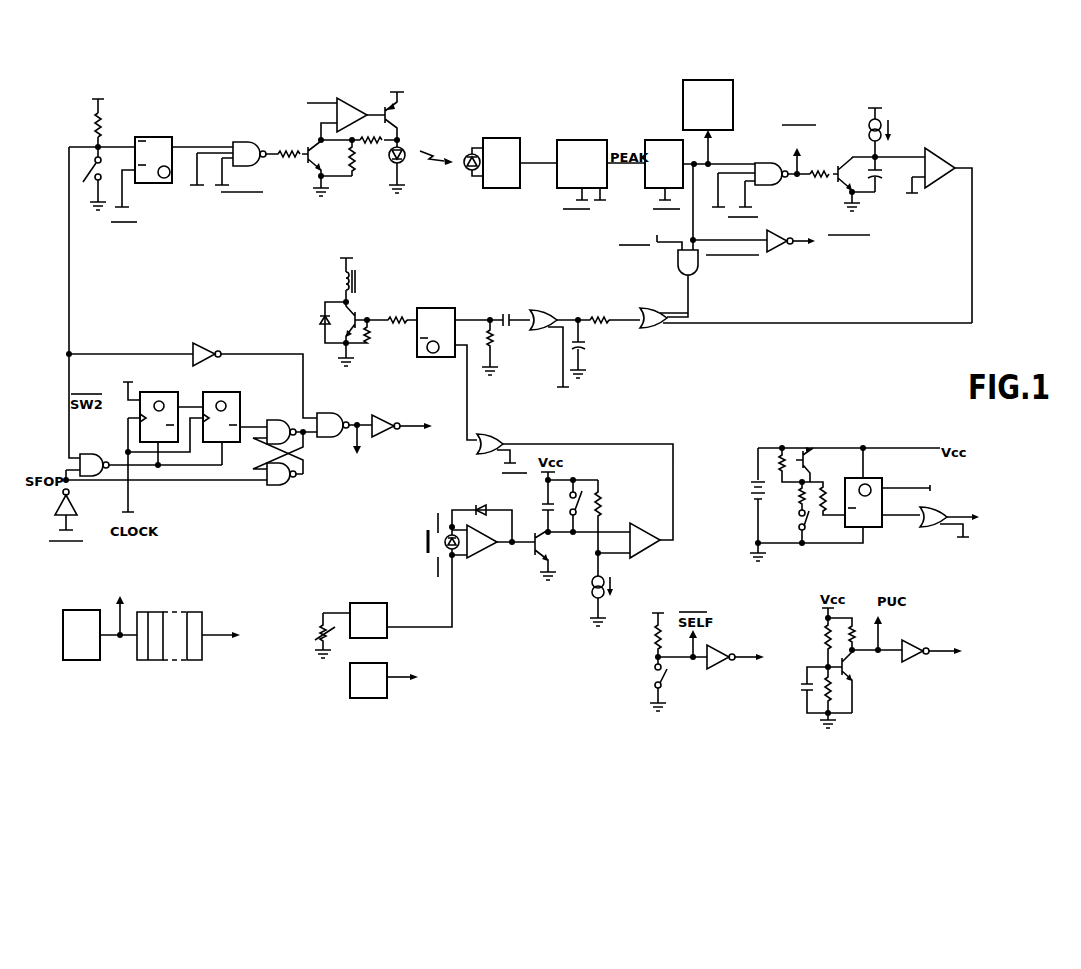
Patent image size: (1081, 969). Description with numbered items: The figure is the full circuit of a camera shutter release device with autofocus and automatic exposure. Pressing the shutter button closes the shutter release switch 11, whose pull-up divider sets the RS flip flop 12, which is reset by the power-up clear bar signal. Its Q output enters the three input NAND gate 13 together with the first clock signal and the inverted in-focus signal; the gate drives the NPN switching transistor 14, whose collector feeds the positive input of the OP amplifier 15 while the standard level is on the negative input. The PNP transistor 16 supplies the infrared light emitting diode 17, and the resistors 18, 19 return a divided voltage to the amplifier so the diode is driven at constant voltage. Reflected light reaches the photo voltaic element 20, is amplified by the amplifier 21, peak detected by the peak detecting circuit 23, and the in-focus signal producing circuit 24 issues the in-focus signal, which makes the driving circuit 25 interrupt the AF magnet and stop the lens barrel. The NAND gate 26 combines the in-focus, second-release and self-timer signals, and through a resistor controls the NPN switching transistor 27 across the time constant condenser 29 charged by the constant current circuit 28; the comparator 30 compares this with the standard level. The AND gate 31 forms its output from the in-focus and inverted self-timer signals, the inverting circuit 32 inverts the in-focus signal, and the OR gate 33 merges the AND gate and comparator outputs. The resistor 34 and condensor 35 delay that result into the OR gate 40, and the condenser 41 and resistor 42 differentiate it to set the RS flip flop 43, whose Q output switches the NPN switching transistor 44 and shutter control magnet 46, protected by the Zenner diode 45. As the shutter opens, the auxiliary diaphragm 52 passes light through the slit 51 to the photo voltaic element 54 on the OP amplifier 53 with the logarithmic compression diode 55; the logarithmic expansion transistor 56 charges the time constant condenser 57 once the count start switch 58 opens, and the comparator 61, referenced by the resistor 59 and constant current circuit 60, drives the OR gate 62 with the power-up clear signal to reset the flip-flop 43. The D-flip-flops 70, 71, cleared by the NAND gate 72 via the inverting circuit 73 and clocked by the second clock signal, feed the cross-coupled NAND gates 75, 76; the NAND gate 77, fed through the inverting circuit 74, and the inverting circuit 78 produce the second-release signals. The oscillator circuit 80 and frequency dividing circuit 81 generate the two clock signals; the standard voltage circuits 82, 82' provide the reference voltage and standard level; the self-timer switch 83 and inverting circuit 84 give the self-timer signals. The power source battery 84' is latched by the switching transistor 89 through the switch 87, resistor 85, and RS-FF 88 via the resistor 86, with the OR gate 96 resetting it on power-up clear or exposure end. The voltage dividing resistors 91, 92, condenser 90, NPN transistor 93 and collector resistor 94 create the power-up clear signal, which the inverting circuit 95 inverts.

The shutter release switch SW2 11 is at (104, 145).
The RS flip flop circuit 12 is at (153, 137).
The 3 input NAND gate 13 is at (240, 142).
The NPN switching transistor 14 is at (308, 160).
The OP amplifier 15 is at (352, 104).
The PNP transistor 16 is at (400, 114).
The infrared light emitting diode 17 is at (403, 161).
The resistor 18 is at (372, 143).
The resistor 19 is at (352, 177).
The photo voltaic element 20 is at (466, 172).
The amplifier 21 is at (507, 188).
The peak detecting circuit 23 is at (577, 140).
The in-focus signal producing circuit 24 is at (658, 140).
The driving circuit 25 is at (733, 94).
The 3 input NAND gate 26 is at (774, 185).
The NPN switching transistor 27 is at (837, 178).
The constant current circuit 28 is at (869, 124).
The time constant condenser 29 is at (882, 172).
The comparator 30 is at (948, 172).
The 2 input AND gate 31 is at (678, 268).
The inverting circuit 32 is at (774, 247).
The 2 input OR gate 33 is at (662, 330).
The resistor 34 is at (598, 316).
The condensor 35 is at (586, 347).
The 2 input OR gate 40 is at (545, 310).
The condenser 41 is at (507, 313).
The resistor 42 is at (493, 348).
The RS flip flop 43 is at (436, 308).
The NPN switching transistor 44 is at (358, 313).
The Zenner diode 45 is at (322, 316).
The shutter control magnet 46 is at (356, 283).
The slit 51 is at (426, 536).
The auxiliary diaphragm 52 is at (440, 523).
The OP amplifier 53 is at (485, 554).
The photo voltaic element 54 is at (442, 565).
The logarithmic compression diode 55 is at (478, 505).
The logarithmic expansion transistor 56 is at (537, 553).
The time constant condenser 57 is at (543, 507).
The count start switch 58 is at (582, 494).
The resistor 59 is at (601, 501).
The constant current circuit 60 is at (592, 587).
The comparator 61 is at (647, 532).
The 2 input OR gate 62 is at (490, 436).
The D-flip-flop circuit 70 is at (157, 392).
The D-flip-flop circuit 71 is at (233, 392).
The 2 input NAND gate 72 is at (88, 454).
The inverting circuit 73 is at (77, 511).
The inverting circuit 74 is at (204, 344).
The 2 input NAND gate 75 is at (272, 420).
The 2 input NAND gate 76 is at (275, 486).
The 2 input NAND gate 77 is at (322, 413).
The inverting circuit 78 is at (377, 415).
The oscillator circuit 80 is at (80, 660).
The frequency dividing circuit 81 is at (167, 660).
The standard voltage circuit 82 is at (374, 612).
The standard voltage circuit 82' is at (396, 696).
The self-timer switch 83 is at (664, 683).
The inverting circuit 84 is at (753, 645).
The power source battery 84' is at (745, 504).
The resistor 85 is at (798, 501).
The resistor 86 is at (825, 488).
The switch SW1 87 is at (808, 521).
The RS-FF 88 is at (877, 481).
The switching transistor 89 is at (802, 449).
The condenser 90 is at (803, 689).
The voltage dividing resistor 91 is at (825, 642).
The voltage dividing resistor 92 is at (836, 685).
The NPN transistor 93 is at (853, 670).
The collector resistor 94 is at (855, 633).
The inverting circuit 95 is at (912, 641).
The OR gate 96 is at (934, 527).